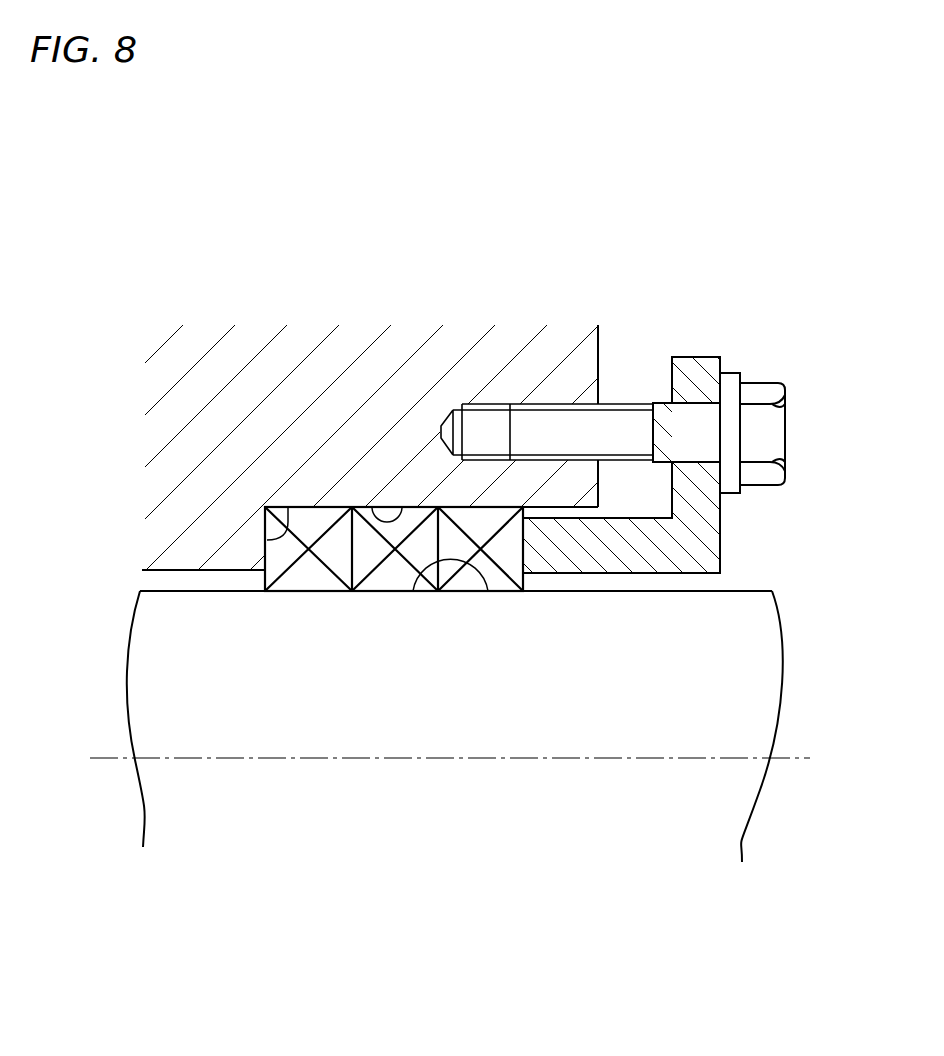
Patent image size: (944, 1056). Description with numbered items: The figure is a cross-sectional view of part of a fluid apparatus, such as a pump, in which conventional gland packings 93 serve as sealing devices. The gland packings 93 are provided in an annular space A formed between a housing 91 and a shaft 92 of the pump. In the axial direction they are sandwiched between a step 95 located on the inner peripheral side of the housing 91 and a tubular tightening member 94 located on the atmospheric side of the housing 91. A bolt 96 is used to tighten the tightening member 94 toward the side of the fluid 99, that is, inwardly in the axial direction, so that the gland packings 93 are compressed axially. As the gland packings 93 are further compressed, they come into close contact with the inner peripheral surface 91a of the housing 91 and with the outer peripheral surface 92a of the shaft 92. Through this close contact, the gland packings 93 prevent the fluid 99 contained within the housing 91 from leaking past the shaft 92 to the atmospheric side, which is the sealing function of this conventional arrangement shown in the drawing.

The housing 91 is at (182, 450).
The inner peripheral surface 91a is at (378, 507).
The shaft 92 is at (205, 730).
The outer peripheral surface 92a is at (488, 591).
The gland packings 93 is at (472, 582).
The tubular tightening member 94 is at (710, 543).
The step 95 is at (289, 507).
The bolt 96 is at (770, 433).
The fluid 99 is at (170, 580).
The annular space A is at (523, 510).